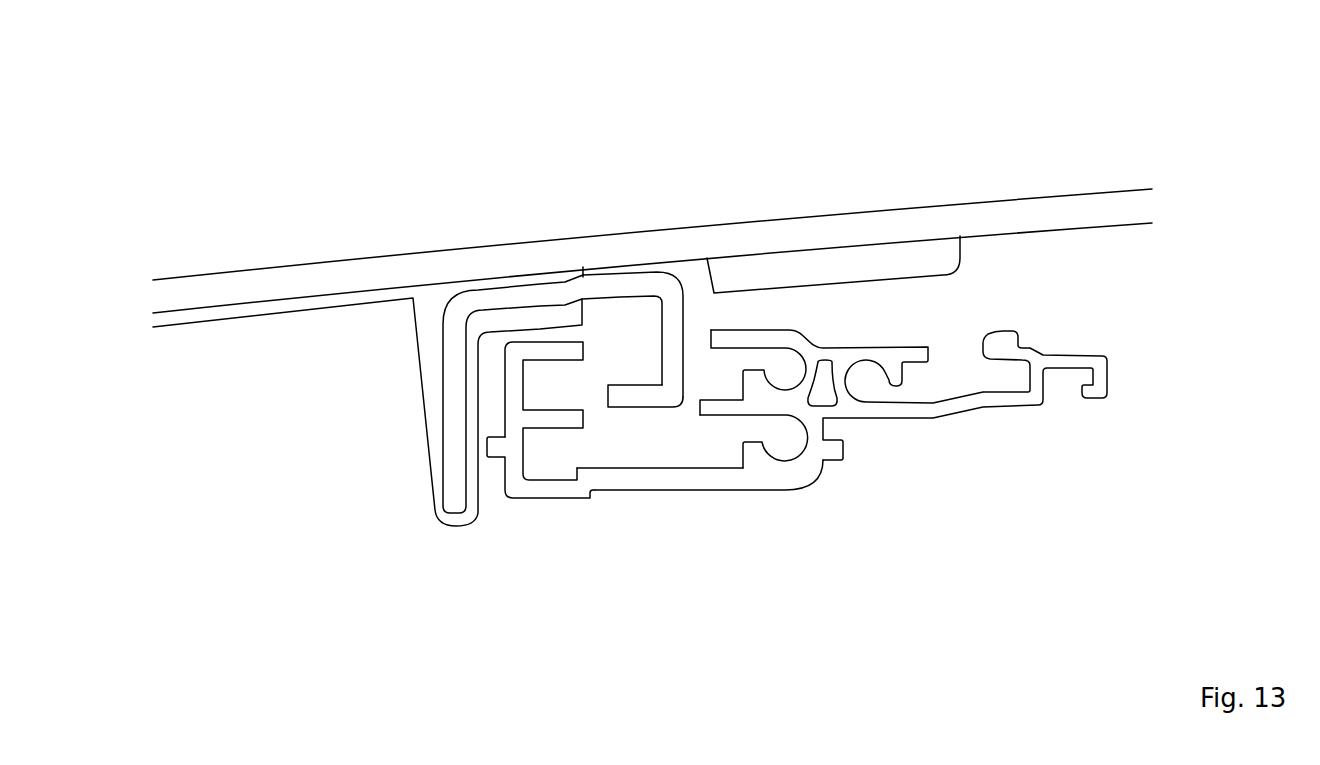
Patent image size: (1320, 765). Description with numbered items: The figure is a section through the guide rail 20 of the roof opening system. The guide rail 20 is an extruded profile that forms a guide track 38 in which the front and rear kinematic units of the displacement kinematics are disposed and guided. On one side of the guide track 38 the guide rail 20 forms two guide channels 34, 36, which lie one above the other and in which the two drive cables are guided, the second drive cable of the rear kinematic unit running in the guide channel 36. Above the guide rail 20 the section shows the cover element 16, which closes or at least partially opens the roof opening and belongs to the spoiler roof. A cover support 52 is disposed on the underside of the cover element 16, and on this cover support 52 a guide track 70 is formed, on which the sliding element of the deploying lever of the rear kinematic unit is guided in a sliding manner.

The cover element 16 is at (957, 222).
The guide rail 20 is at (606, 482).
The guide channel 34 is at (778, 362).
The guide channel 36 is at (787, 447).
The guide track 38 is at (556, 460).
The cover support 52 is at (665, 293).
The guide track 70 is at (623, 397).